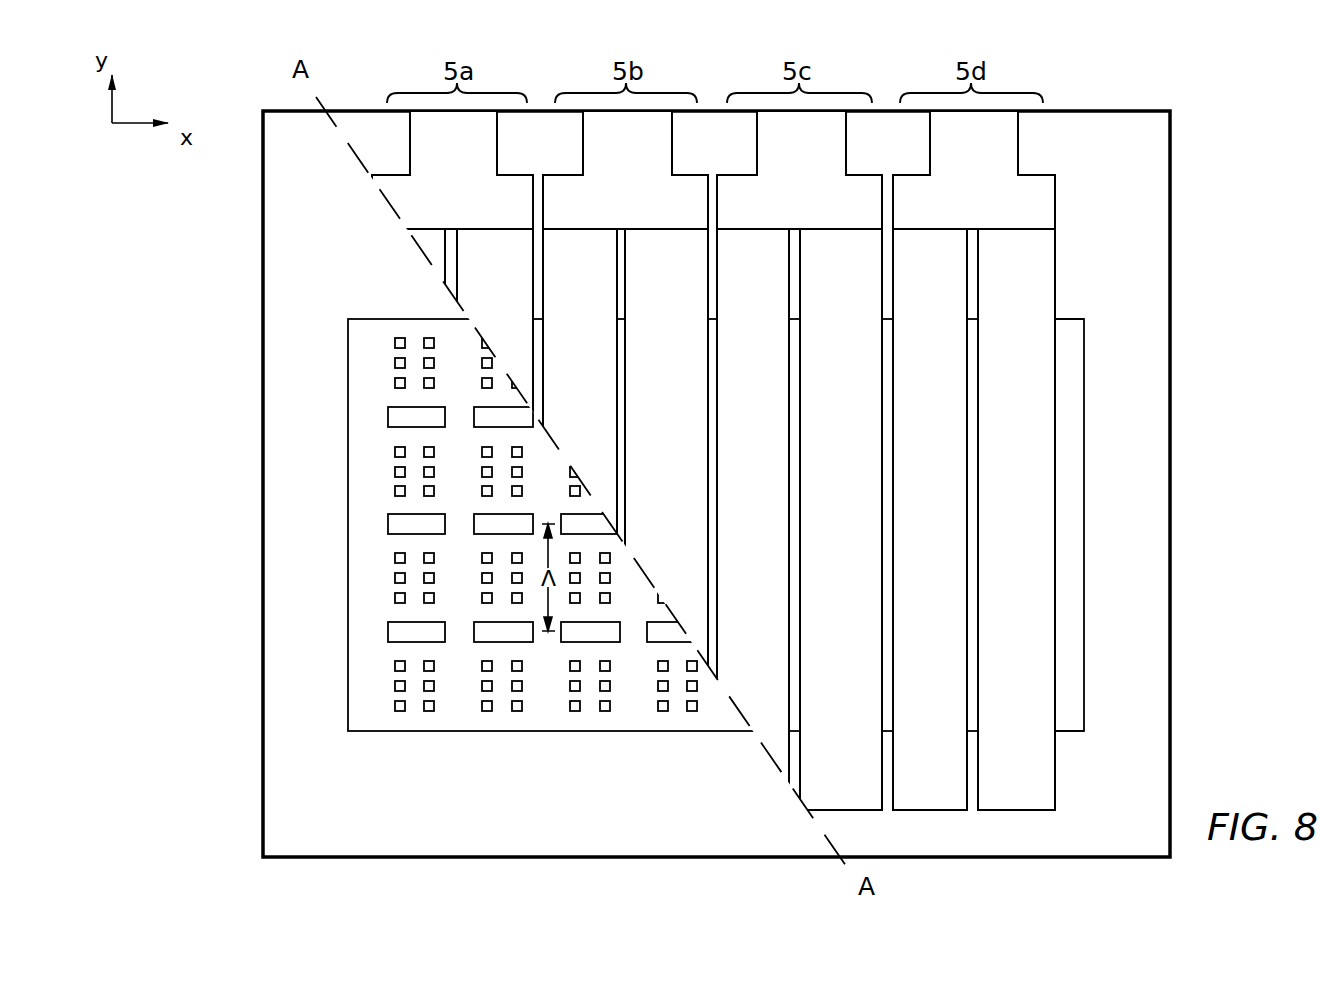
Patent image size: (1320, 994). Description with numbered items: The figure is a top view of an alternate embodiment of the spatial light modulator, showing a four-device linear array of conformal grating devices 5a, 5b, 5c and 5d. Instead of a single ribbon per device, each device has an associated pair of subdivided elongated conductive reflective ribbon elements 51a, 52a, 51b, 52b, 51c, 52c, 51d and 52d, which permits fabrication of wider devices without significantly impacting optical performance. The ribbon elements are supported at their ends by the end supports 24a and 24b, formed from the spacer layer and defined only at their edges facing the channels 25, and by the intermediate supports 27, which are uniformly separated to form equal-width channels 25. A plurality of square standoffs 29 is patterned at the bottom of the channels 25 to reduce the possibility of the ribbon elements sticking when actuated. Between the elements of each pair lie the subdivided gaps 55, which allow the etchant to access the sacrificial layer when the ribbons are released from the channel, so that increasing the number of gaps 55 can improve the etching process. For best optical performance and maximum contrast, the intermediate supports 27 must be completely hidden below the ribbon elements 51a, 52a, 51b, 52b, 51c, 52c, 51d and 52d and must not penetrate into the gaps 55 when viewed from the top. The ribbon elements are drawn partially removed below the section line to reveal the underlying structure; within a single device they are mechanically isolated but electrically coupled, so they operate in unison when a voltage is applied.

The conformal grating device 5a is at (452, 460).
The conformal grating device 5b is at (625, 460).
The conformal grating device 5c is at (801, 460).
The conformal grating device 5d is at (974, 460).
The end support 24a is at (1069, 288).
The end support 24b is at (1069, 754).
The channel 25 is at (383, 365).
The intermediate support 27 is at (388, 416).
The standoff 29 is at (431, 711).
The conductive reflective ribbon element 51a is at (430, 242).
The conductive reflective ribbon element 52a is at (502, 244).
The conductive reflective ribbon element 51b is at (584, 243).
The conductive reflective ribbon element 52b is at (682, 244).
The conductive reflective ribbon element 51c is at (760, 243).
The conductive reflective ribbon element 52c is at (840, 496).
The conductive reflective ribbon element 51d is at (942, 243).
The conductive reflective ribbon element 52d is at (1034, 244).
The subdivided gap 55 is at (885, 637).